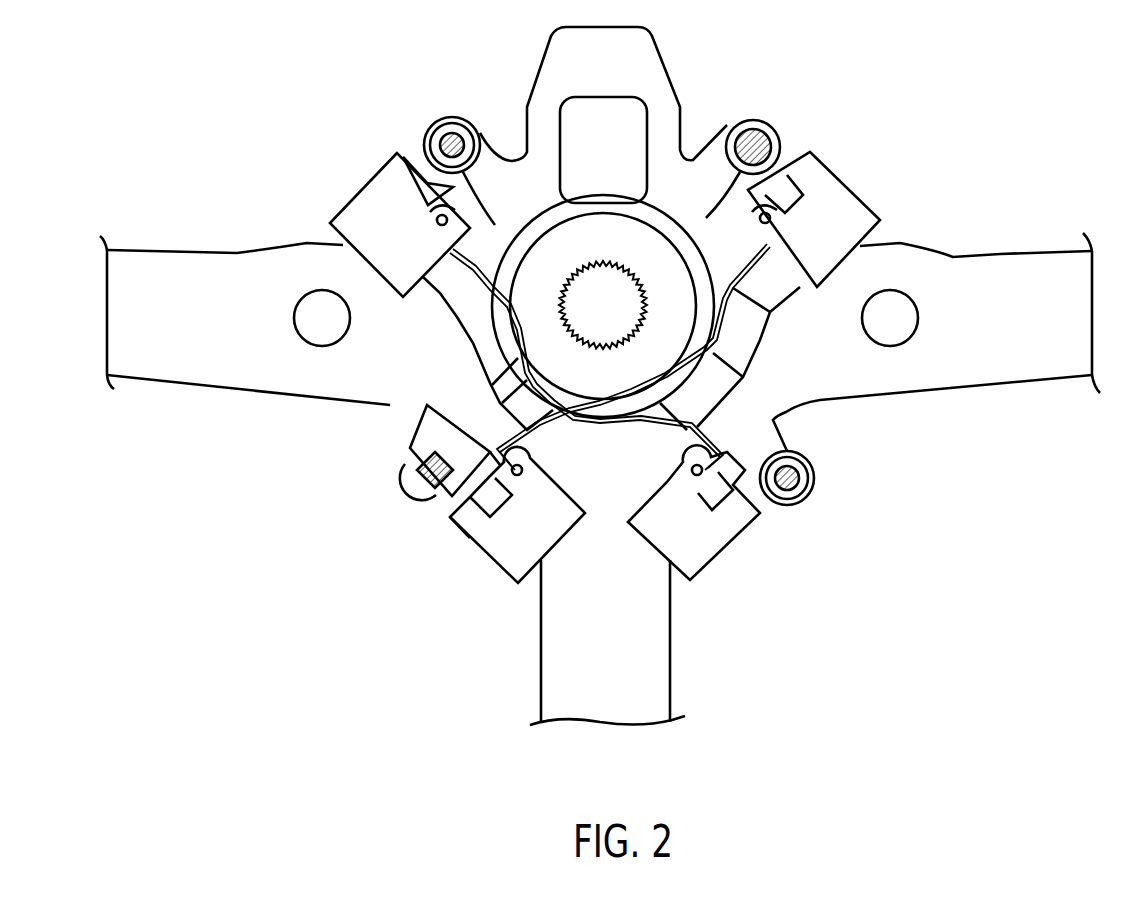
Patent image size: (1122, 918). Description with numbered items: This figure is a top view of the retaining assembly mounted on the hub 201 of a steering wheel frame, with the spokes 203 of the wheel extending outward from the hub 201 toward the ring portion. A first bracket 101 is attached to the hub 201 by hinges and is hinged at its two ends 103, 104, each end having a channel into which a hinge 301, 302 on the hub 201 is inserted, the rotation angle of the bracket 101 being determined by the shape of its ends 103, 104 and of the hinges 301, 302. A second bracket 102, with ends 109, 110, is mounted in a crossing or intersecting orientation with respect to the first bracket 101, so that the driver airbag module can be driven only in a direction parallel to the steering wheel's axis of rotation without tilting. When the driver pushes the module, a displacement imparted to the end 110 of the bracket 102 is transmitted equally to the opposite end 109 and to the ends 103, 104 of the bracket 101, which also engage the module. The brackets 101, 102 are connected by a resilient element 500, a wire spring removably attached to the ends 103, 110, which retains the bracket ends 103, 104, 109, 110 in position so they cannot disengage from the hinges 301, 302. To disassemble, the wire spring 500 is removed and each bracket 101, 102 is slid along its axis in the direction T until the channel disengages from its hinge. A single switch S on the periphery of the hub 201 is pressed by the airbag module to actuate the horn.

The bracket 101 is at (488, 560).
The second bracket 102 is at (358, 180).
The end of bracket 103 is at (468, 542).
The end of bracket 104 is at (850, 180).
The end of second bracket 109 is at (345, 228).
The end of second bracket 110 is at (700, 583).
The hub 201 is at (427, 405).
The spokes 203 is at (205, 253).
The hinge 301 is at (748, 490).
The hinge 302 is at (428, 145).
The resilient element 500 is at (773, 420).
The switch S is at (418, 460).
The direction T is at (328, 190).